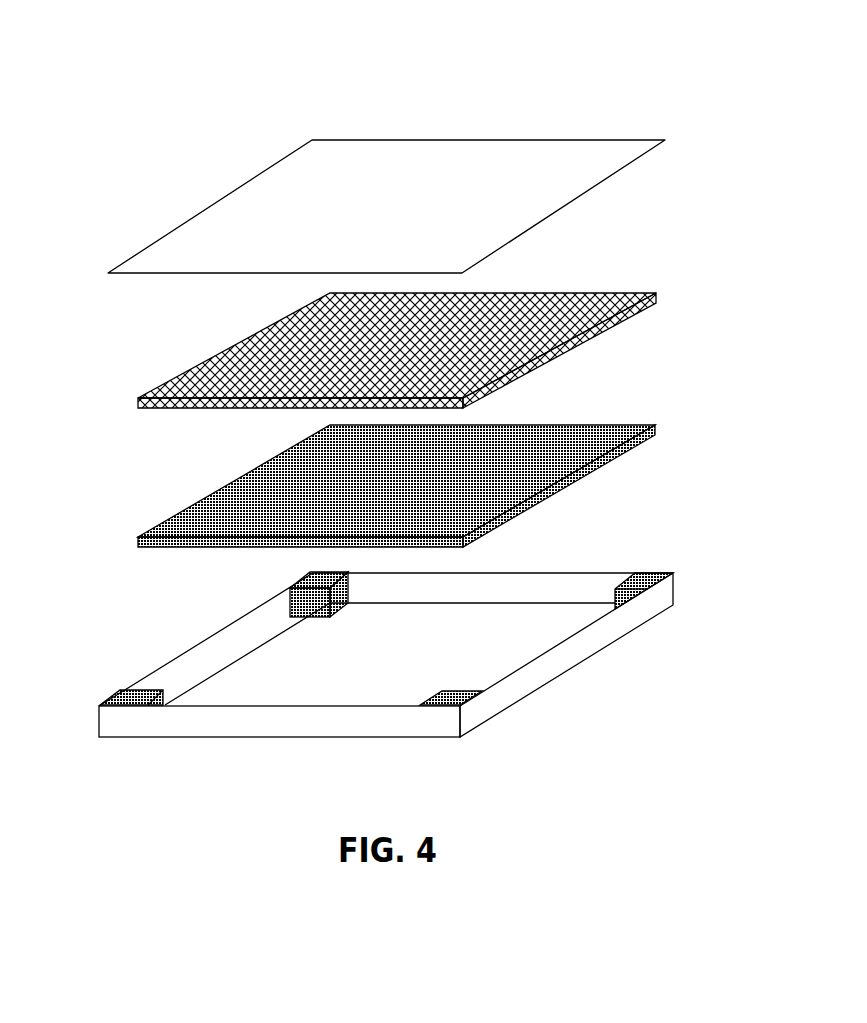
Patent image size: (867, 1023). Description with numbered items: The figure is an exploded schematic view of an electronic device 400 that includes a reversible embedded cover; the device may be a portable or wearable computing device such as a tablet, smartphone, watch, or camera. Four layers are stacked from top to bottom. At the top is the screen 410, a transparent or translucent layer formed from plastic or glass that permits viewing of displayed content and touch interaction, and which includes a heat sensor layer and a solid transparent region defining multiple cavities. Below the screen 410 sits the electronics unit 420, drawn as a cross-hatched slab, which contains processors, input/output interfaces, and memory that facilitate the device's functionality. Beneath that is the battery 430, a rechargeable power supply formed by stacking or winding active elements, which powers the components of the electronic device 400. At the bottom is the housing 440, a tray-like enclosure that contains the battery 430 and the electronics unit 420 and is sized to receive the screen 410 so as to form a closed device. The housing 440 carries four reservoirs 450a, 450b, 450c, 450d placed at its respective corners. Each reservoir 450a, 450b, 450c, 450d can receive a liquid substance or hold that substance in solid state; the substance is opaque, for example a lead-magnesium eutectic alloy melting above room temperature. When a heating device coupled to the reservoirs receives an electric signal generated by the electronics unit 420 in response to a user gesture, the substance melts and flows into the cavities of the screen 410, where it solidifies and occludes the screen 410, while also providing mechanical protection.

The electronic device 400 is at (714, 57).
The screen 410 is at (283, 155).
The electronics unit 420 is at (208, 340).
The battery 430 is at (201, 485).
The housing 440 is at (174, 636).
The reservoir 450a is at (313, 573).
The reservoir 450b is at (637, 573).
The reservoir 450c is at (122, 690).
The reservoir 450d is at (450, 690).